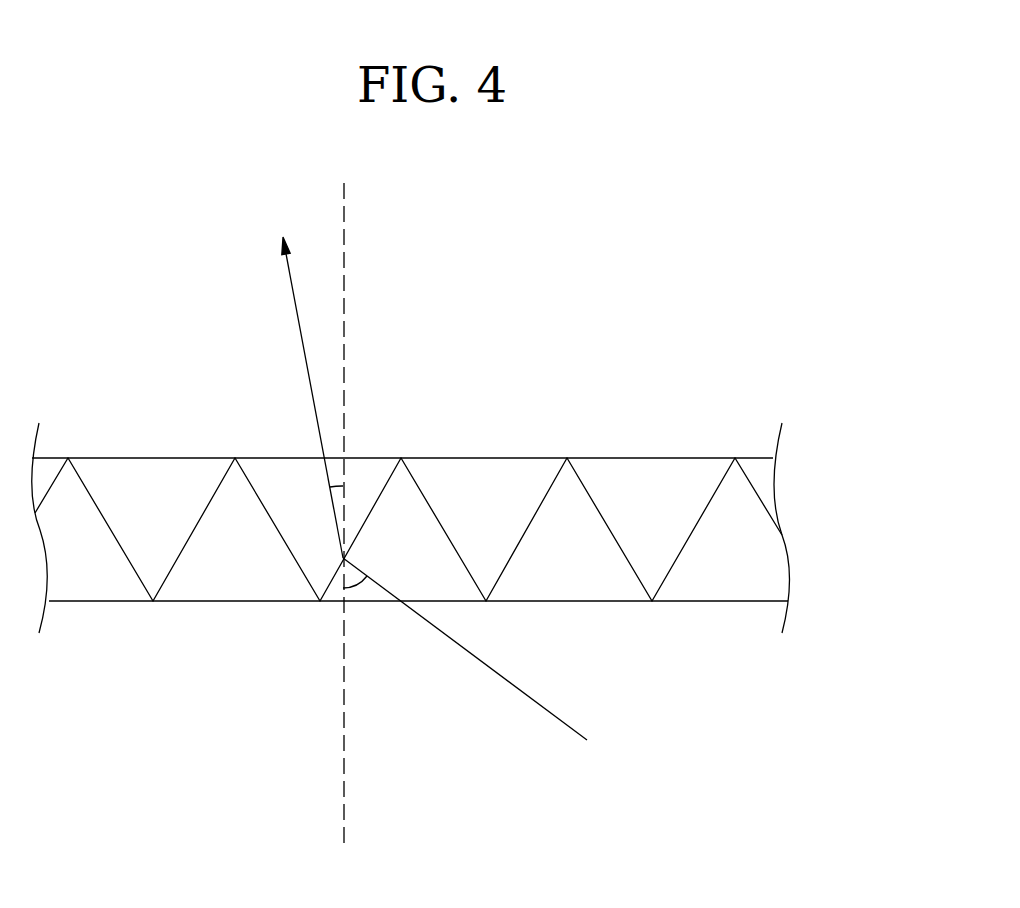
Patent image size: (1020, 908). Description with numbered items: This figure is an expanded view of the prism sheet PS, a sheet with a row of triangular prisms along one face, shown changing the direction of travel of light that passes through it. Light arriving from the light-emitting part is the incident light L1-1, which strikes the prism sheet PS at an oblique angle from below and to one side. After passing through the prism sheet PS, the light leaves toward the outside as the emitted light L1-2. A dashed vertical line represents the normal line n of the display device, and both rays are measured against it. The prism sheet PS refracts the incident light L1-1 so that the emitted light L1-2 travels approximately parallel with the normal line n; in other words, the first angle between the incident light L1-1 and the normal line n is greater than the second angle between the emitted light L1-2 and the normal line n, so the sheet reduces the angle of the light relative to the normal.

The prism sheet PS is at (812, 528).
The normal line n is at (344, 501).
The incident light L1-1 is at (494, 656).
The emitted light L1-2 is at (300, 384).